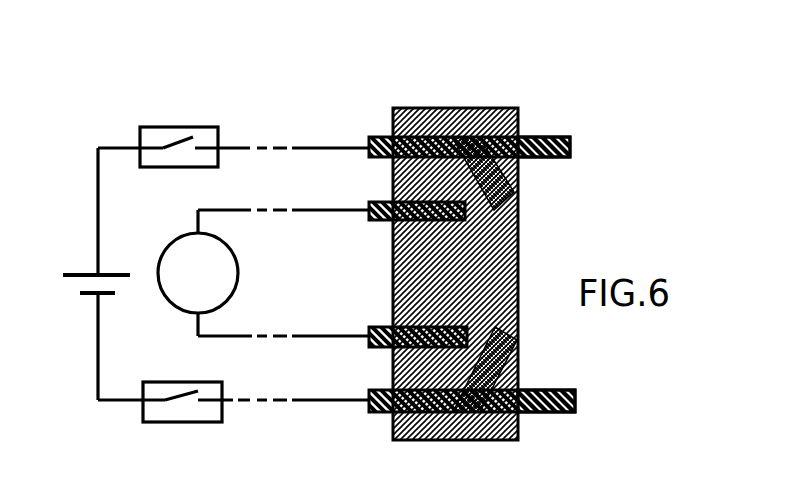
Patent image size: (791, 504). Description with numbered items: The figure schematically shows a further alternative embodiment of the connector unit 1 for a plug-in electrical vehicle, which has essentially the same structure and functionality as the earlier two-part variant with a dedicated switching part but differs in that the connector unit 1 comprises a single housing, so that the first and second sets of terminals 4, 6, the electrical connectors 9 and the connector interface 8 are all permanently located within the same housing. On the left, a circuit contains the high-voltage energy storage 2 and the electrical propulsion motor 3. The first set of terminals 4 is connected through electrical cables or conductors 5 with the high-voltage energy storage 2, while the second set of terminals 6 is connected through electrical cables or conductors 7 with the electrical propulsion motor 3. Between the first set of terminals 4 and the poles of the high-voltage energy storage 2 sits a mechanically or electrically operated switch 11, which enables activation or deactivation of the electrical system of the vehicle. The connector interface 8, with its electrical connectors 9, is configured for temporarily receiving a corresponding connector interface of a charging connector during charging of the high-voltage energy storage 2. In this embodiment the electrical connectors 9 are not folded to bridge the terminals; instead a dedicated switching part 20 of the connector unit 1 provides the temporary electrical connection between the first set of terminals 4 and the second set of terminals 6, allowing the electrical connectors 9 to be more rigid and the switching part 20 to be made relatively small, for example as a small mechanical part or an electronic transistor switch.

The connector unit 1 is at (426, 126).
The high-voltage energy storage 2 is at (80, 270).
The electrical propulsion motor 3 is at (170, 302).
The first set of terminals 4 is at (370, 331).
The electrical cables or conductors 5 is at (237, 147).
The second set of terminals 6 is at (370, 393).
The electrical cables or conductors 7 is at (243, 213).
The connector interface 8 is at (457, 232).
The electrical connectors 9 is at (555, 390).
The switch 11 is at (163, 127).
The switching part 20 is at (518, 303).